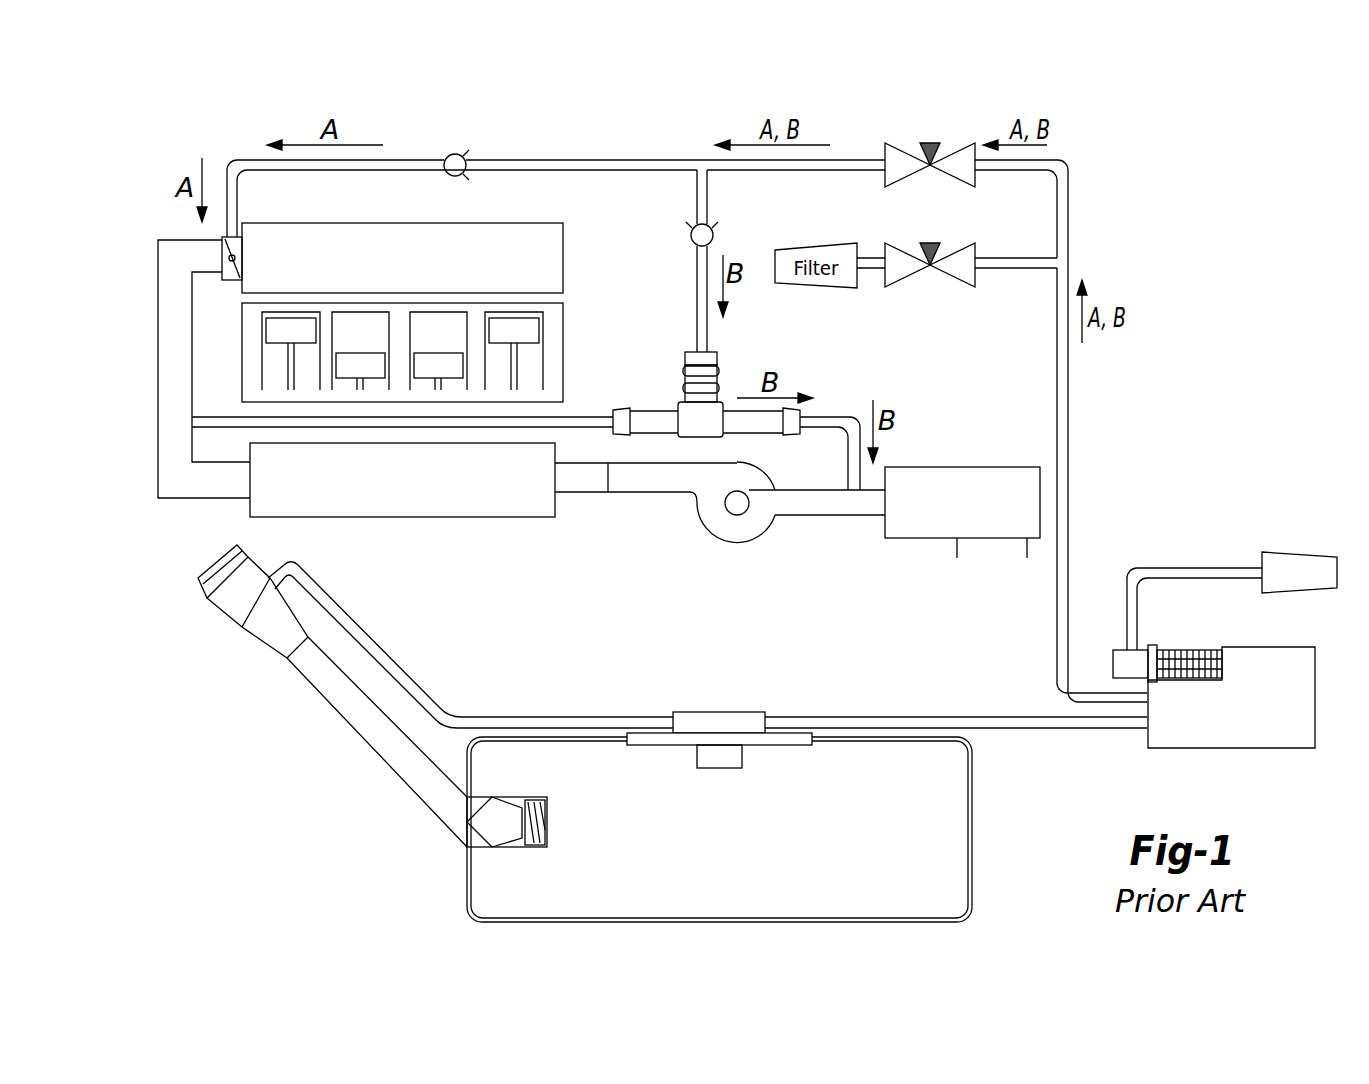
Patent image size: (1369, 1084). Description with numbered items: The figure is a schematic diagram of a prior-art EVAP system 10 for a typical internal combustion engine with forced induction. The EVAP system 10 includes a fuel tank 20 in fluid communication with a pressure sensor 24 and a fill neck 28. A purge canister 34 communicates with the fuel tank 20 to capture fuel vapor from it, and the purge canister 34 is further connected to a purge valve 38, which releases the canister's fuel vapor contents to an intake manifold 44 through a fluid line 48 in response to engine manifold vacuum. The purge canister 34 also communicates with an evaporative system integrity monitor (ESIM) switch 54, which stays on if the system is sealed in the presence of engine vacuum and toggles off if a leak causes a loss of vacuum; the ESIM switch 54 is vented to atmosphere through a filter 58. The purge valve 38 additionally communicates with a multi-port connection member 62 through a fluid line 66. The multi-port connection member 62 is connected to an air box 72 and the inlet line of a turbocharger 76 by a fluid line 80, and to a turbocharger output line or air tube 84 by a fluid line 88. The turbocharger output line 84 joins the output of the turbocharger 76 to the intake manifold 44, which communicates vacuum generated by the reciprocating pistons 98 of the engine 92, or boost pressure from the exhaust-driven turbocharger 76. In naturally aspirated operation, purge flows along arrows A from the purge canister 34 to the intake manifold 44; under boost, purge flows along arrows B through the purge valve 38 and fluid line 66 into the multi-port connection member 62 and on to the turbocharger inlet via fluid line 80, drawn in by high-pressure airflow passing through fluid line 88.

The EVAP system 10 is at (1132, 140).
The fuel tank 20 is at (975, 842).
The pressure sensor 24 is at (742, 757).
The fill neck 28 is at (355, 733).
The purge canister 34 is at (1275, 750).
The purge valve 38 is at (955, 145).
The intake manifold 44 is at (563, 255).
The fluid line 48 is at (553, 160).
The evaporative system integrity monitor (ESIM) switch 54 is at (1108, 650).
The filter 58 is at (1298, 552).
The multi-port connection member 62 is at (717, 360).
The fluid line 66 is at (707, 195).
The air box 72 is at (958, 467).
The turbocharger 76 is at (735, 542).
The fluid line 80 is at (843, 416).
The turbocharger output line 84 is at (158, 385).
The fluid line 88 is at (593, 416).
The engine 92 is at (366, 344).
The reciprocating pistons 98 is at (262, 330).